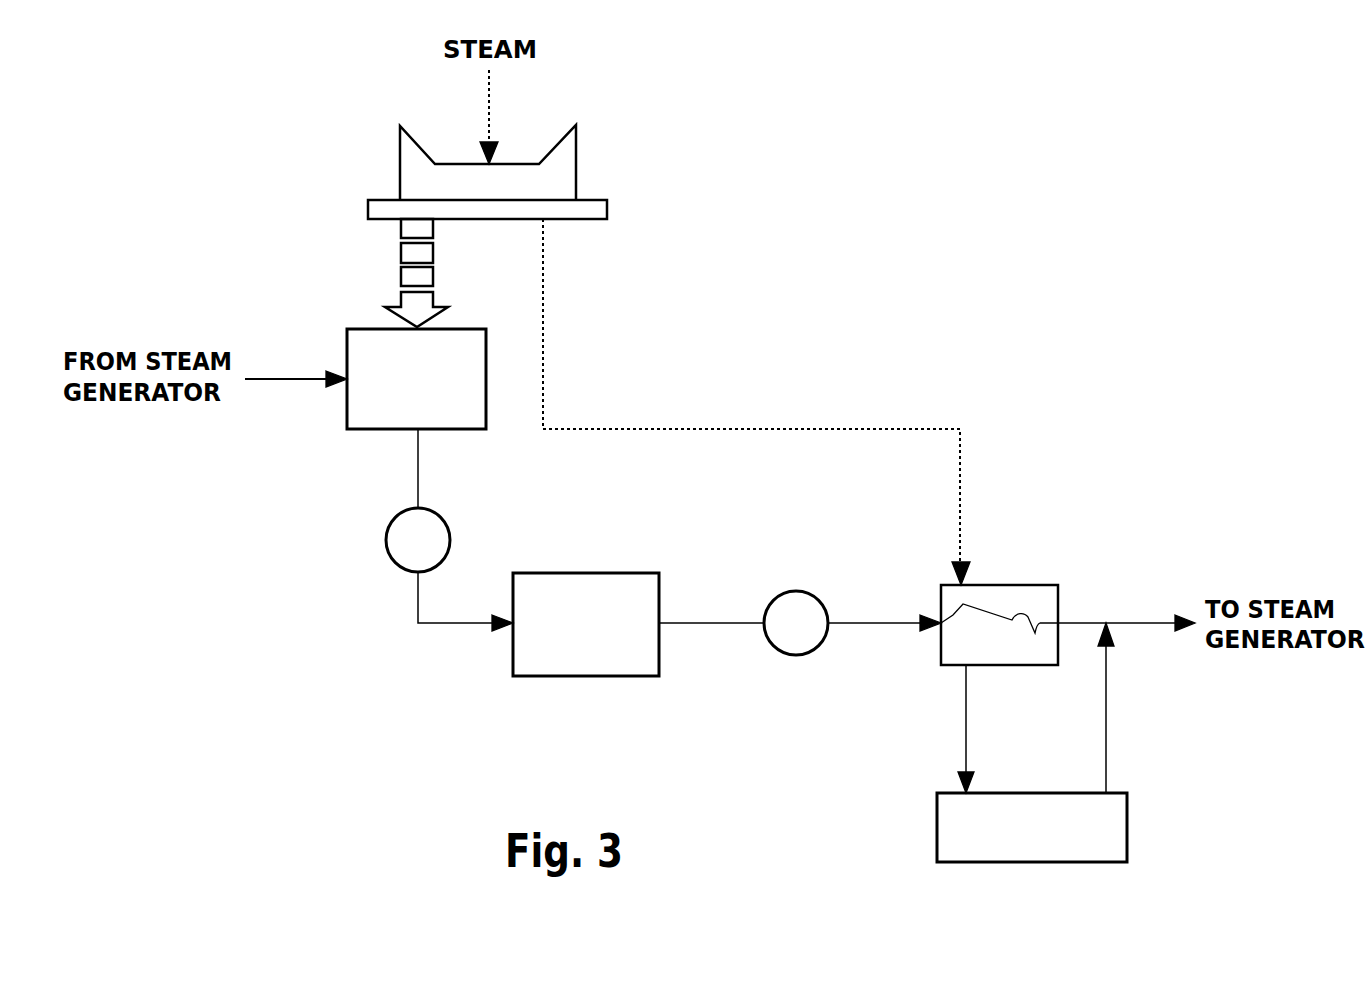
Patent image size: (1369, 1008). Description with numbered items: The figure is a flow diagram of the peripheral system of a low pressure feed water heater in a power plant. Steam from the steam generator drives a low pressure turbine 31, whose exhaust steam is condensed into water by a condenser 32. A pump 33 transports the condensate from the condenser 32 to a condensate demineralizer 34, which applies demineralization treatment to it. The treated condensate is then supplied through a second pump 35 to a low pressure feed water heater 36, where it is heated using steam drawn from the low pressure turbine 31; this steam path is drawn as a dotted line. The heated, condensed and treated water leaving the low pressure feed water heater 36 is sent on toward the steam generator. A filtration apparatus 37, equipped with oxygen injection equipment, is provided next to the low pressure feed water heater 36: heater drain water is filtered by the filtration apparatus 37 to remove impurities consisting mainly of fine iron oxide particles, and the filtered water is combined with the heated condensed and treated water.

The low pressure turbine 31 is at (563, 157).
The condenser 32 is at (347, 400).
The pump 33 is at (398, 558).
The condensate demineralizer 34 is at (568, 668).
The pump 35 is at (778, 642).
The low pressure feed water heater 36 is at (1025, 592).
The filtration apparatus 37 is at (1117, 825).